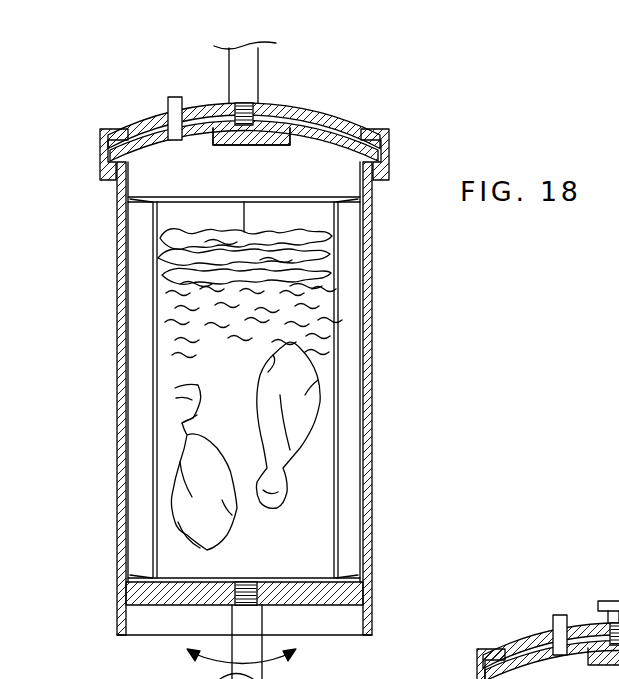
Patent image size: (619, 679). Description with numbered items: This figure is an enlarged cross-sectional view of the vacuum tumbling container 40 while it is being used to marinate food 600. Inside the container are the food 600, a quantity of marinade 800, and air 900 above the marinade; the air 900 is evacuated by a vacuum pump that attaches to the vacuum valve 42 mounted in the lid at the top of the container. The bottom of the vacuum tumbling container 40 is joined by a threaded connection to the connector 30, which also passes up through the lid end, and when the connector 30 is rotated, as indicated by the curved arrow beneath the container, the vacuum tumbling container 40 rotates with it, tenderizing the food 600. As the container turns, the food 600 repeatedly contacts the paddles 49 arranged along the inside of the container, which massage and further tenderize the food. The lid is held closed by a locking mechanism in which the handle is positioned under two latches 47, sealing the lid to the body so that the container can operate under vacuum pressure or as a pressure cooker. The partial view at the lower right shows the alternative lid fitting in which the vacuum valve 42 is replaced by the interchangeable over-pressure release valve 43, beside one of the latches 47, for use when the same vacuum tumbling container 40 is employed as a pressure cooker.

The vacuum tumbling container 40 is at (110, 100).
The vacuum valve 42 is at (165, 115).
The connector 30 is at (228, 78).
The paddles 49 is at (140, 292).
The air 900 is at (262, 184).
The marinade 800 is at (242, 359).
The food 600 is at (177, 476).
The over-pressure release valve 43 is at (553, 625).
The latches 47 is at (477, 665).